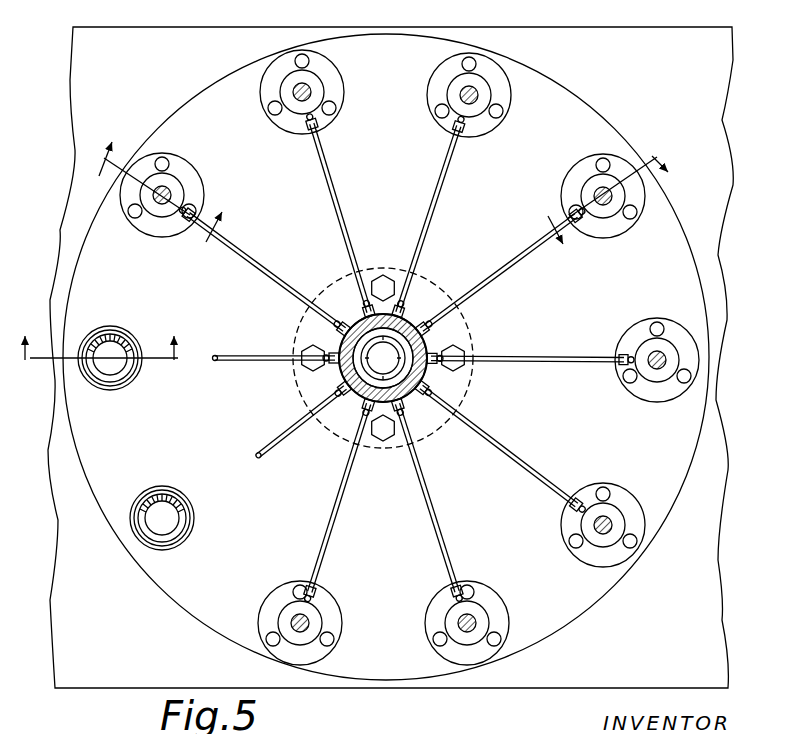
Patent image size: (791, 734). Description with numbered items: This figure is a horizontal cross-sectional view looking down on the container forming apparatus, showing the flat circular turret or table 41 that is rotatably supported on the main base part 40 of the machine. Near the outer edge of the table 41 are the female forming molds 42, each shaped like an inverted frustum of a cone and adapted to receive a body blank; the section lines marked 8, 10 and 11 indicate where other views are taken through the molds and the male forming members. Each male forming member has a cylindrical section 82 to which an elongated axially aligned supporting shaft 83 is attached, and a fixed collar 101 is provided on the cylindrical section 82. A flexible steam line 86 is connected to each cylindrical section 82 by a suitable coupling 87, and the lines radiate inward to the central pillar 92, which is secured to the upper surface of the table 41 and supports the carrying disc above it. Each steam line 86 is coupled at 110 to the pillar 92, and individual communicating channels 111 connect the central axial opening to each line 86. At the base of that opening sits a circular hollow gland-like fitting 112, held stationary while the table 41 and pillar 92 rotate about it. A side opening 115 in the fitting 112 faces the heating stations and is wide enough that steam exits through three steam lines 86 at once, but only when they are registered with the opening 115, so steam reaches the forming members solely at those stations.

The section line 8- 8 is at (96, 363).
The section line 10- 10 is at (151, 201).
The section line 11- 11 is at (599, 186).
The main base part 40 is at (712, 660).
The turret or flat circular table 41 is at (609, 597).
The female forming mold 42 is at (121, 374).
The cylindrical section 82 is at (296, 110).
The supporting shaft 83 is at (311, 92).
The flexible steam line 86 is at (345, 215).
The coupling 87 is at (318, 122).
The pillar 92 is at (297, 322).
The fixed collar 101 is at (330, 70).
The coupling of steam line to pillar 110 is at (360, 315).
The communicating channel 111 is at (410, 312).
The hollow gland-like fitting 112 is at (424, 370).
The side opening 115 is at (425, 340).